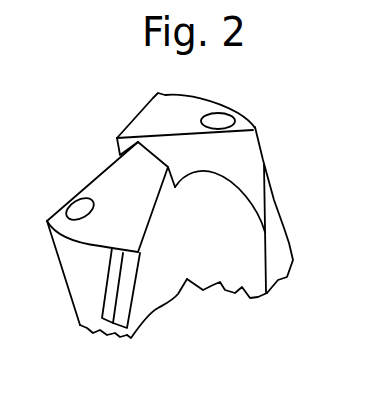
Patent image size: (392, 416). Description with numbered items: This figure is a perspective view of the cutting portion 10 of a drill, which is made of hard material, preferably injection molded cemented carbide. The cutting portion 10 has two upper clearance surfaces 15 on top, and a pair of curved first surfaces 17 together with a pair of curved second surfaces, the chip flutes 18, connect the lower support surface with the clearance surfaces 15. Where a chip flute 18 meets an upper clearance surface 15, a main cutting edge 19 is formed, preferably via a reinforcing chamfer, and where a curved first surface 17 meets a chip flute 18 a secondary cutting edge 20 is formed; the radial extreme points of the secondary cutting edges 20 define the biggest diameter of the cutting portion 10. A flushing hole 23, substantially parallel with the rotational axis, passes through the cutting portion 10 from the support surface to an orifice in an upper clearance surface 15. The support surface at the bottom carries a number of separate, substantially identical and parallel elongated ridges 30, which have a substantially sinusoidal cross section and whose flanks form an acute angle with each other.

The cutting portion 10 is at (266, 128).
The upper clearance surfaces 15 is at (158, 115).
The flushing hole 23 is at (218, 121).
The curved first surfaces 17 is at (80, 276).
The main cutting edges 19 is at (162, 198).
The secondary cutting edges 20 is at (138, 288).
The chip flutes 18 is at (211, 265).
The ridges 30 is at (115, 335).